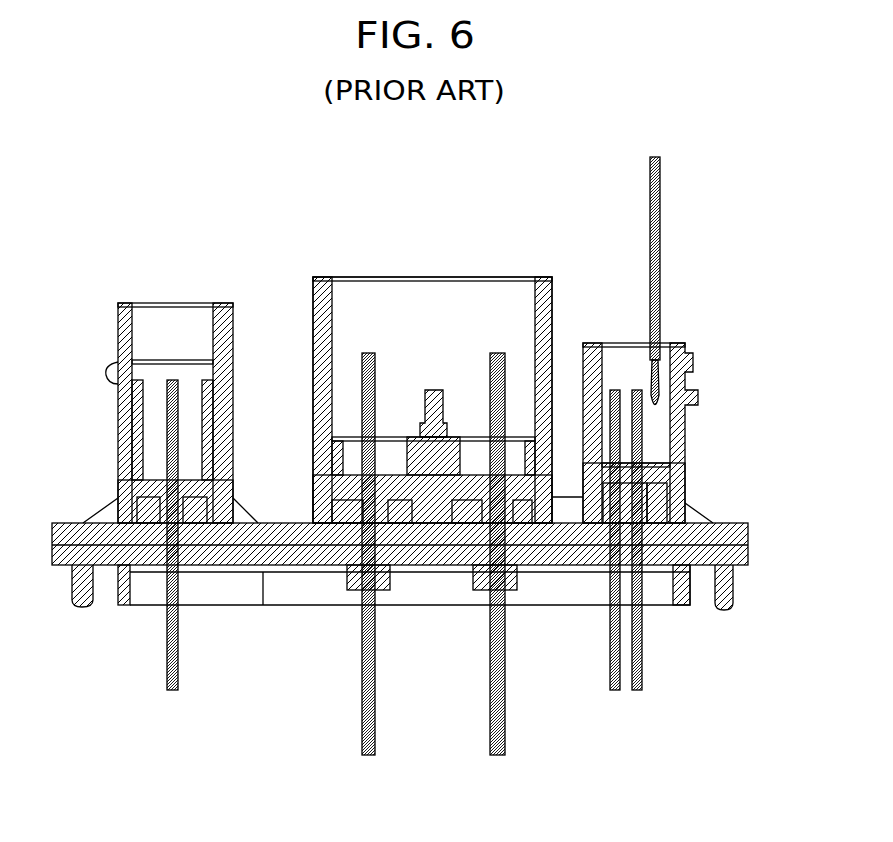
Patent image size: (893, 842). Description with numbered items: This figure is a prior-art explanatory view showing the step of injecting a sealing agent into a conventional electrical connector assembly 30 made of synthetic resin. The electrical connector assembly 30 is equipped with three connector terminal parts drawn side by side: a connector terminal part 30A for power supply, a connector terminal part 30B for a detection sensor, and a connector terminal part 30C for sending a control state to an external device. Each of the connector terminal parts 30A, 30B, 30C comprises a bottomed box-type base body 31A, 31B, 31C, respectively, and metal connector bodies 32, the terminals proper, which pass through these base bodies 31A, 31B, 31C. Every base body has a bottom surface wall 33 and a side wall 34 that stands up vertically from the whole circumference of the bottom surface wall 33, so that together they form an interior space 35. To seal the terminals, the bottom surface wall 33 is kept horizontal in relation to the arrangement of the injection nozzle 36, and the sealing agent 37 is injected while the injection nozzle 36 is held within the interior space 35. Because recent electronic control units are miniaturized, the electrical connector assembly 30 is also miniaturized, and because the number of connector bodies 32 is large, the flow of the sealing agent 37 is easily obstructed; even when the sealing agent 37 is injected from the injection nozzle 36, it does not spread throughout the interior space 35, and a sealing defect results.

The electrical connector assembly 30 is at (750, 572).
The connector terminal part for power supply 30A is at (316, 279).
The connector terminal part for a detection sensor 30B is at (686, 344).
The connector terminal part for sending a control state 30C is at (118, 306).
The base body 31A is at (318, 473).
The base body 31B is at (680, 473).
The base body 31C is at (130, 490).
The connector body 32 is at (175, 380).
The bottom surface wall 33 is at (120, 450).
The side wall 34 is at (230, 342).
The interior space 35 is at (153, 387).
The injection nozzle 36 is at (660, 200).
The sealing agent 37 is at (668, 385).